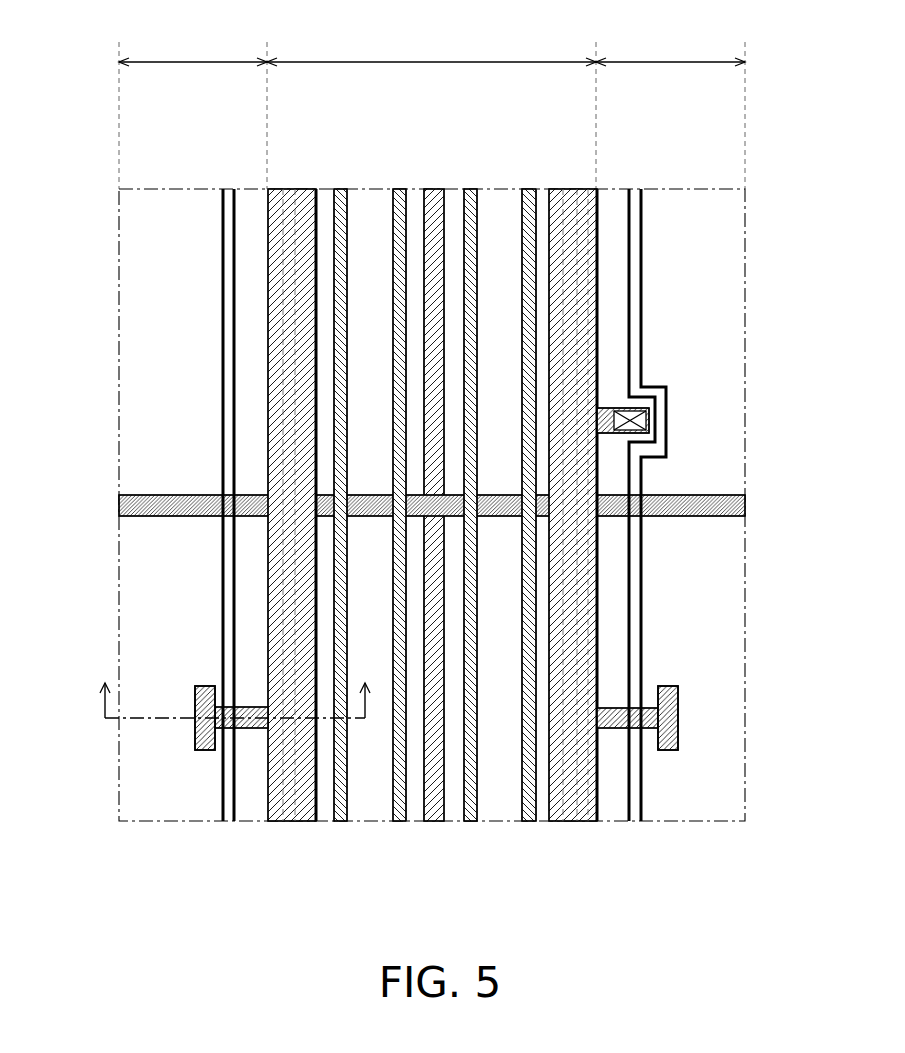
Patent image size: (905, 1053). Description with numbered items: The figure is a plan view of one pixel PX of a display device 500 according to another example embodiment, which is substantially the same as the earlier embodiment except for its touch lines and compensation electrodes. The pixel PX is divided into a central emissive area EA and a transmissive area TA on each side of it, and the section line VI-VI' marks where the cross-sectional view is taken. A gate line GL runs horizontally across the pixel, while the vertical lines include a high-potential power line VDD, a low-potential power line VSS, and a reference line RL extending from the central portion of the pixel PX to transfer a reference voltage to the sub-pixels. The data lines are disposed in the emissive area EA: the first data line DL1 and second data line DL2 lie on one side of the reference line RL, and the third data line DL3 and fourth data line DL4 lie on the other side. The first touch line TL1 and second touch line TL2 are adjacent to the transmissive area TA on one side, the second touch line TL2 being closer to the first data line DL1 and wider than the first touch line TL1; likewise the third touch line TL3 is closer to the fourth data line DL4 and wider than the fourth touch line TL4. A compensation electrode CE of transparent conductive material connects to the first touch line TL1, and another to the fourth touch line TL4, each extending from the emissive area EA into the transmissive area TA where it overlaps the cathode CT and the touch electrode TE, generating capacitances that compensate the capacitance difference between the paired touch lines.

The display device 500 is at (745, 21).
The transmissive area TA is at (432, 52).
The emissive area EA is at (431, 52).
The pixel PX is at (745, 189).
The touch electrode TE is at (150, 253).
The high-potential power line VDD is at (292, 190).
The reference line RL is at (436, 190).
The low-potential power line VSS is at (573, 190).
The cathode CT is at (641, 215).
The gate line GL is at (728, 505).
The compensation electrode CE is at (195, 742).
The line VI-VI' VI is at (236, 687).
The first touch line TL1 is at (280, 821).
The second touch line TL2 is at (307, 821).
The third touch line TL3 is at (560, 821).
The fourth touch line TL4 is at (587, 821).
The first data line DL1 is at (342, 821).
The second data line DL2 is at (400, 821).
The third data line DL3 is at (467, 821).
The fourth data line DL4 is at (533, 821).